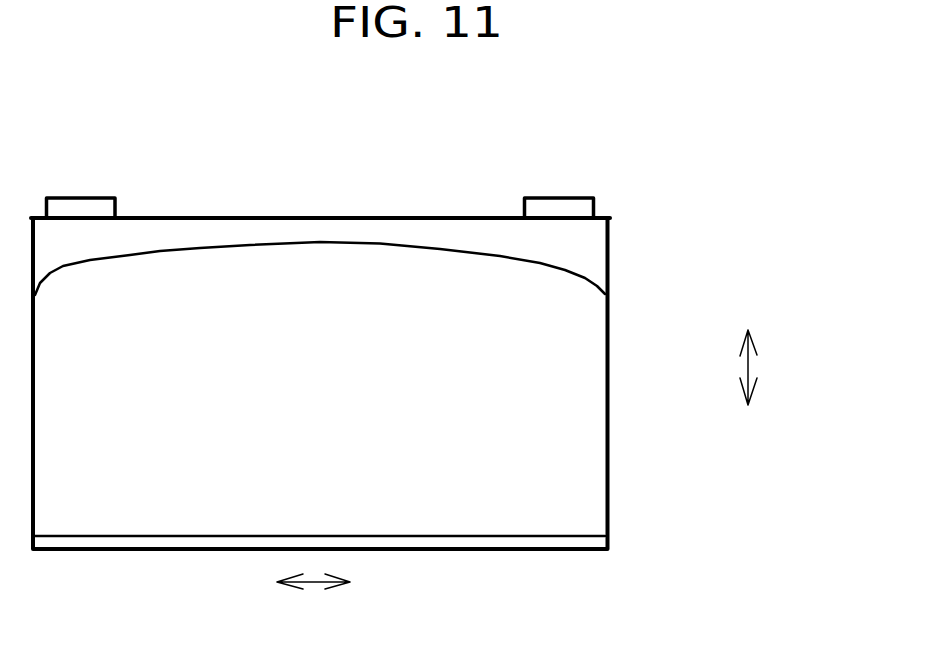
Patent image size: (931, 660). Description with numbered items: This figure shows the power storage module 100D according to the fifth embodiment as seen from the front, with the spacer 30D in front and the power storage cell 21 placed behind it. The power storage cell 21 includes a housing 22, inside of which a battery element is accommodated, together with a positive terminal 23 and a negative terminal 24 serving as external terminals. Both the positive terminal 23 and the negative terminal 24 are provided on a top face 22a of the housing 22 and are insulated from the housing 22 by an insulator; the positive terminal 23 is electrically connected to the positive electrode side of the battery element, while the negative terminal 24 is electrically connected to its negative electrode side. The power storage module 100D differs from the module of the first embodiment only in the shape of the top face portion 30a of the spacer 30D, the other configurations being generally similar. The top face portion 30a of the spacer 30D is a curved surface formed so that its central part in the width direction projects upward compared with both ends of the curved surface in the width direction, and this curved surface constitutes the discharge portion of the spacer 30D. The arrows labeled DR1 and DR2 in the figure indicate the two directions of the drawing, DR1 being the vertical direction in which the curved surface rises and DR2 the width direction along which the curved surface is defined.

The power storage module 100D is at (693, 128).
The power storage cell 21 is at (162, 179).
The housing 22 is at (610, 244).
The top face 22a is at (473, 217).
The positive terminal 23 is at (555, 196).
The negative terminal 24 is at (77, 196).
The spacer 30D is at (583, 393).
The top face portion 30a is at (319, 241).
The first direction (height) DR1 is at (753, 368).
The second direction (width) DR2 is at (313, 584).